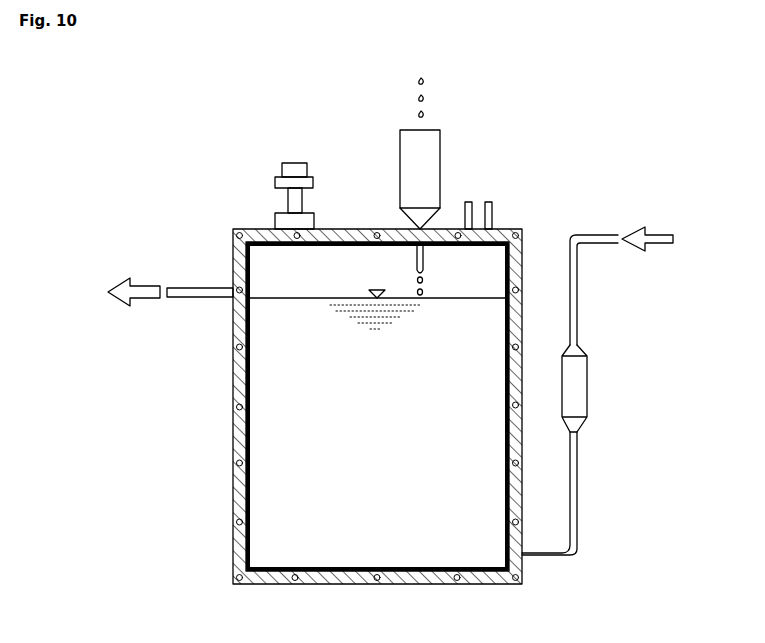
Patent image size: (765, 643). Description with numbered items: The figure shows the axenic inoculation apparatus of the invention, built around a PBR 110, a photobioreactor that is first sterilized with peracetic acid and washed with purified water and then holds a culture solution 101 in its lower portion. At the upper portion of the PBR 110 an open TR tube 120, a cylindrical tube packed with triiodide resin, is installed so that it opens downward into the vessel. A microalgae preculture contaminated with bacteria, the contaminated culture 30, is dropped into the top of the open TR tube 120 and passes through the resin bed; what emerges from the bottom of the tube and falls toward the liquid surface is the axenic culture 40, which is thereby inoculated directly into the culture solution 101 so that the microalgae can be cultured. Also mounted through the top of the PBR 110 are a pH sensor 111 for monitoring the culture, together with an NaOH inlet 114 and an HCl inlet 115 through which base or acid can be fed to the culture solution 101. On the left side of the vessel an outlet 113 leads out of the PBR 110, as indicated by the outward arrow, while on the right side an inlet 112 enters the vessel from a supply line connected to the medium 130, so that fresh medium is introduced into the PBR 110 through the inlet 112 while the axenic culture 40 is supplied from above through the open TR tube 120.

The contaminated culture 30 is at (428, 81).
The axenic culture 40 is at (418, 292).
The culture solution 101 is at (313, 330).
The PBR 110 is at (230, 428).
The pH sensor 111 is at (288, 163).
The inlet 112 is at (597, 233).
The outlet 113 is at (188, 287).
The NaOH inlet 114 is at (468, 201).
The HCl inlet 115 is at (488, 201).
The open TR tube 120 is at (440, 157).
The medium 130 is at (587, 385).